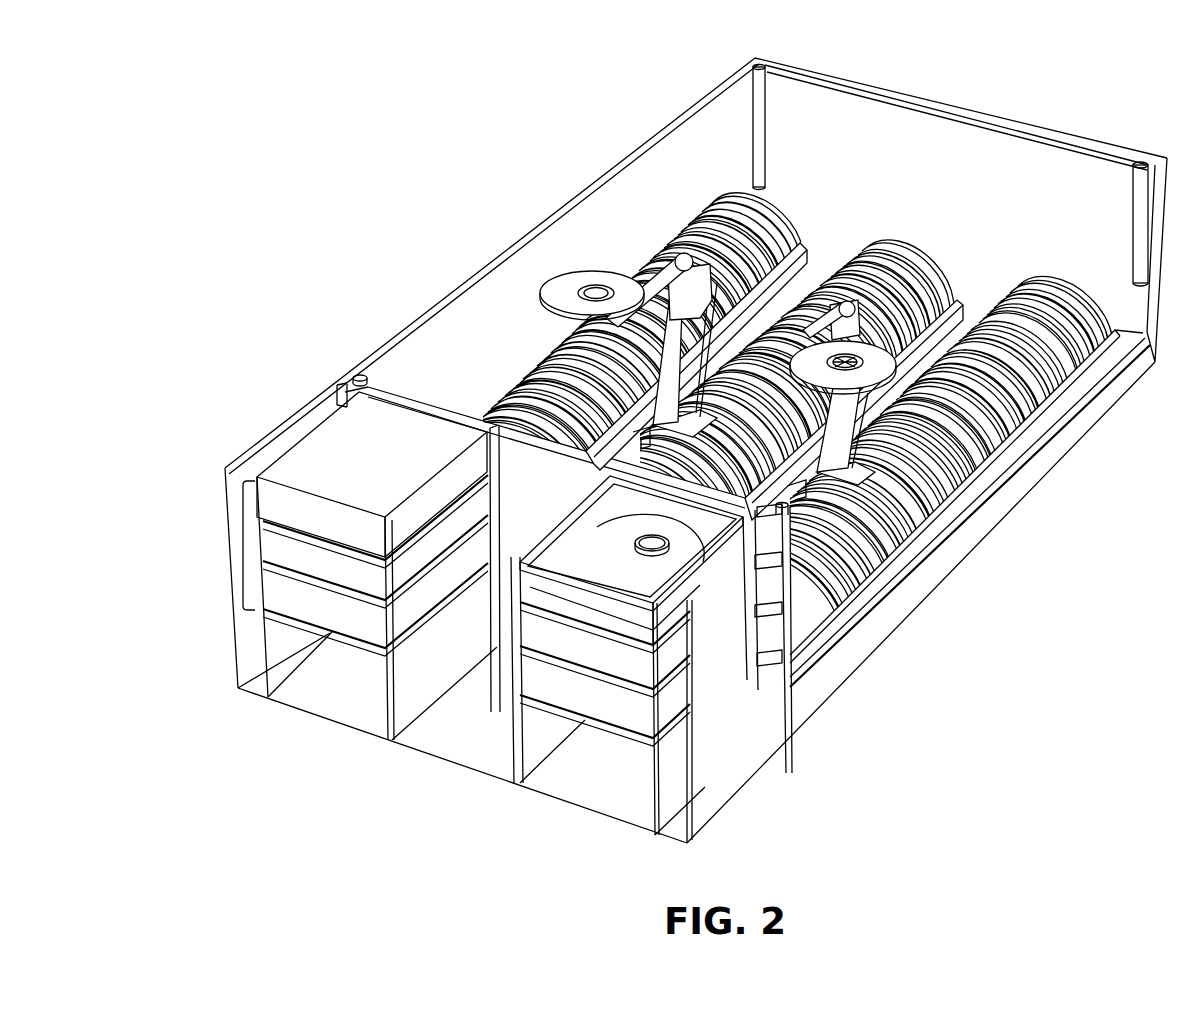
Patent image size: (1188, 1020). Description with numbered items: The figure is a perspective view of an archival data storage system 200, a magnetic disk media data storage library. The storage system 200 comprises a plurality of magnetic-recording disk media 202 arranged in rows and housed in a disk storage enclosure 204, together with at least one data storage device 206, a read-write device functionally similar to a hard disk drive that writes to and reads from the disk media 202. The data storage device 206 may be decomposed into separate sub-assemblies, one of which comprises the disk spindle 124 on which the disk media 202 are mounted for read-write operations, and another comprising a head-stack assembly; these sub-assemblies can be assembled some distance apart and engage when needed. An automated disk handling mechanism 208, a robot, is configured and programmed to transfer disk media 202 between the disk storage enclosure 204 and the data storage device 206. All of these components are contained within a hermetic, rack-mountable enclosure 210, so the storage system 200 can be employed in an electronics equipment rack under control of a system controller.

The data storage system 200 is at (421, 94).
The magnetic-recording disk media 202 is at (1083, 276).
The disk storage enclosure 204 is at (705, 95).
The data storage device 206 is at (238, 548).
The automated disk handling mechanism 208 is at (705, 250).
The hermetic enclosure 210 is at (300, 400).
The disk spindle 124 is at (651, 550).